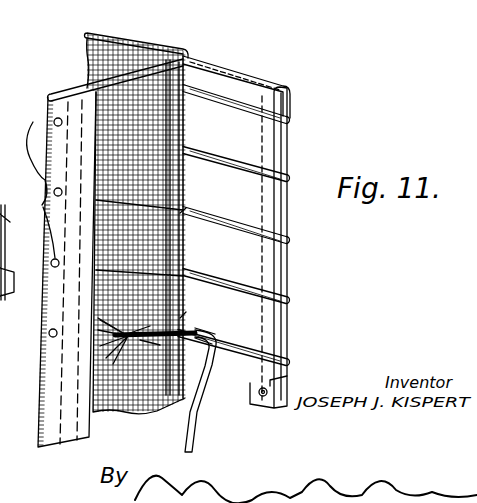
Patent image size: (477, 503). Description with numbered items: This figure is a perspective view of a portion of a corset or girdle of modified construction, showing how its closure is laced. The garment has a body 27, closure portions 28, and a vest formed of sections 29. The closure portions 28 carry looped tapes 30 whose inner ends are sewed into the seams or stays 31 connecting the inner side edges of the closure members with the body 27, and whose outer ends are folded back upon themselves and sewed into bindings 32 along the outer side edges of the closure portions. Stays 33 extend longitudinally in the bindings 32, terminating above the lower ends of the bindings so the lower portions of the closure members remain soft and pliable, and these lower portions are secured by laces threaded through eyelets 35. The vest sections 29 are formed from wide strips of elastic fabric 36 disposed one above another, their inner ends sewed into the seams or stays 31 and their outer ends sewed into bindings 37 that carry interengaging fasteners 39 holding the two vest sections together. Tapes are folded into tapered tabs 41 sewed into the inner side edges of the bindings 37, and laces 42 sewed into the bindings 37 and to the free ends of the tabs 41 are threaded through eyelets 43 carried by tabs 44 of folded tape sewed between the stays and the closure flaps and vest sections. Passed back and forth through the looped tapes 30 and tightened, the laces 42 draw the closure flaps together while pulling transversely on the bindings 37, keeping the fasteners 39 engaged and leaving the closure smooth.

The body 27 is at (88, 62).
The closure portions 28 is at (236, 98).
The vest sections 29 is at (97, 106).
The looped tapes 30 is at (288, 180).
The seams or stays 31 is at (168, 53).
The bindings 32 is at (268, 280).
The stays 33 is at (243, 388).
The eyelets 35 is at (278, 385).
The elastic fabric 36 is at (183, 215).
The bindings 37 is at (52, 388).
The interengaging fasteners 39 is at (52, 118).
The tapered tabs 41 is at (98, 318).
The laces 42 is at (187, 449).
The eyelets 43 is at (205, 322).
The tabs 44 is at (203, 354).